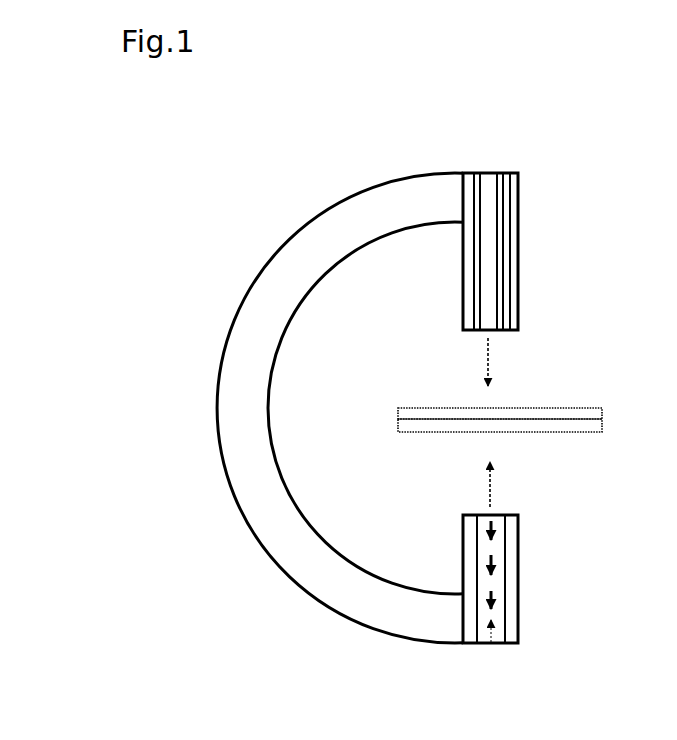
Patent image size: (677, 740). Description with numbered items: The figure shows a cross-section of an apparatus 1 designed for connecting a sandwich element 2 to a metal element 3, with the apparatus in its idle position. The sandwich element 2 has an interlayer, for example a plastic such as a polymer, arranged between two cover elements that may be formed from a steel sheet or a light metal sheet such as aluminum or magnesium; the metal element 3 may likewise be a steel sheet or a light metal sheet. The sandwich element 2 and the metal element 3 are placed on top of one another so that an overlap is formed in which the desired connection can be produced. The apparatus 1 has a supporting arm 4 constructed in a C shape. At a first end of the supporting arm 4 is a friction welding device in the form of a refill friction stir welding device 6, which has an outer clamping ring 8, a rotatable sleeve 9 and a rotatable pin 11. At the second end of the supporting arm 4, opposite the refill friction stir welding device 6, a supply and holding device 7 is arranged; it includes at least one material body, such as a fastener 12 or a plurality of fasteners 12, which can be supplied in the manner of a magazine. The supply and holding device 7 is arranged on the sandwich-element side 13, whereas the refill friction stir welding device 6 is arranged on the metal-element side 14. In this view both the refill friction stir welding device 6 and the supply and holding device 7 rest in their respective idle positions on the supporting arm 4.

The apparatus 1 is at (180, 263).
The sandwich element 2 is at (558, 426).
The metal element 3 is at (556, 409).
The supporting arm 4 is at (217, 425).
The refill friction stir welding device 6 is at (520, 171).
The supply and holding device 7 is at (504, 611).
The outer clamping ring 8 is at (468, 250).
The rotatable sleeve 9 is at (481, 268).
The rotatable pin 11 is at (491, 302).
The fastener 12 is at (464, 522).
The sandwich-element side 13 is at (332, 465).
The metal-element side 14 is at (321, 364).